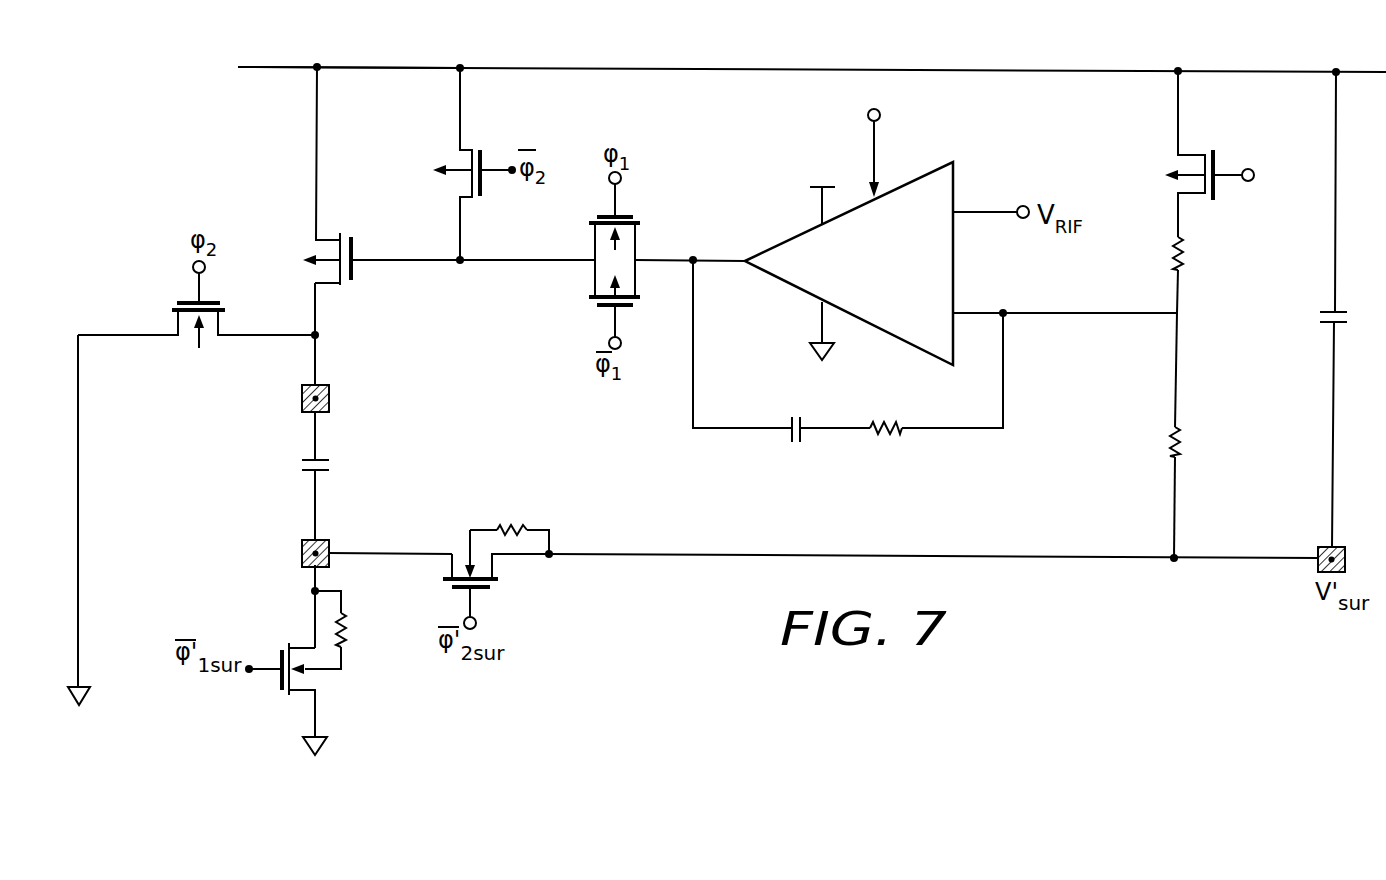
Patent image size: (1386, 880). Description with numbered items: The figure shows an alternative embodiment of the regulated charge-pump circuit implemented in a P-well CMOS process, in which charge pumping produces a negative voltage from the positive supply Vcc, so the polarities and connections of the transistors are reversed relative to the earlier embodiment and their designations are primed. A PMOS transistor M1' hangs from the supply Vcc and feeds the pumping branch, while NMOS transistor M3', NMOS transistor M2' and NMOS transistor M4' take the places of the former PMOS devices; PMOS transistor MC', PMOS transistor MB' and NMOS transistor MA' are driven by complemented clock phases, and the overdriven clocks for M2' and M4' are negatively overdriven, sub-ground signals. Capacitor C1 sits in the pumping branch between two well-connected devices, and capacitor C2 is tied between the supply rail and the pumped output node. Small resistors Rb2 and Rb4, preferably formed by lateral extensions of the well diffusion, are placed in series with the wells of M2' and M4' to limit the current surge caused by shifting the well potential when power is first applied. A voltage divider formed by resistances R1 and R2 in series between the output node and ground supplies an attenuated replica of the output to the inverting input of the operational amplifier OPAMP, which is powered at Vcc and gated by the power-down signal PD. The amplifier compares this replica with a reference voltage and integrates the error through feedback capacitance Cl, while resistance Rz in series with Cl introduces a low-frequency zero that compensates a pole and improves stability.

The PMOS transistor M1' is at (381, 259).
The NMOS transistor M2' is at (302, 699).
The NMOS transistor M3' is at (196, 304).
The NMOS transistor M4' is at (488, 576).
The NMOS transistor MA' is at (632, 234).
The PMOS transistor MB' is at (630, 312).
The PMOS transistor MC' is at (466, 164).
The first resistance of voltage divider R1 is at (1194, 275).
The second resistance of voltage divider R2 is at (1191, 435).
The well resistor Rb2 is at (350, 630).
The well resistor Rb4 is at (509, 525).
The resistance Rz is at (886, 451).
The capacitor C1 is at (332, 473).
The capacitor C2 is at (1351, 309).
The integrating capacitance Cl is at (795, 449).
The operational amplifier OPAMP is at (849, 222).
The power-down signal PD is at (1228, 154).
The supply voltage Vcc is at (349, 49).